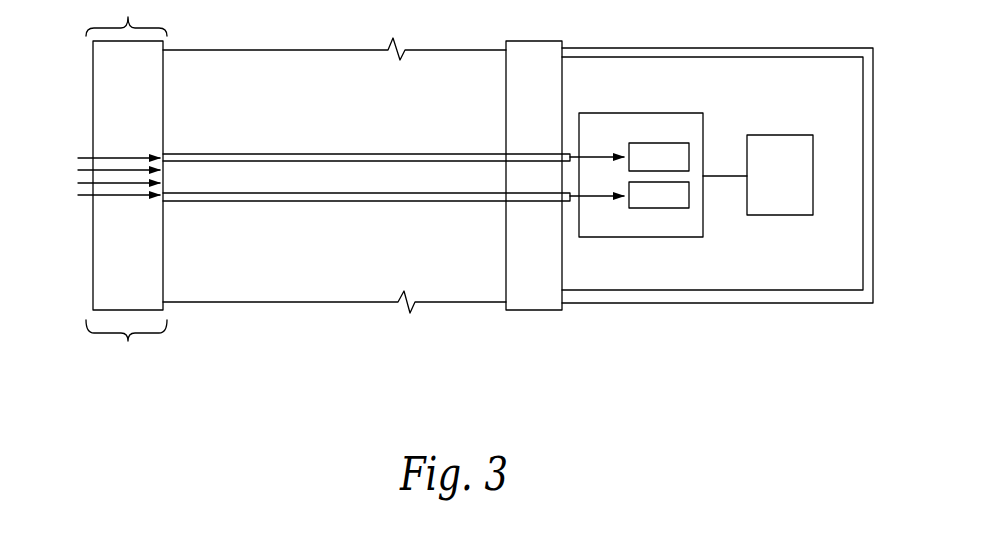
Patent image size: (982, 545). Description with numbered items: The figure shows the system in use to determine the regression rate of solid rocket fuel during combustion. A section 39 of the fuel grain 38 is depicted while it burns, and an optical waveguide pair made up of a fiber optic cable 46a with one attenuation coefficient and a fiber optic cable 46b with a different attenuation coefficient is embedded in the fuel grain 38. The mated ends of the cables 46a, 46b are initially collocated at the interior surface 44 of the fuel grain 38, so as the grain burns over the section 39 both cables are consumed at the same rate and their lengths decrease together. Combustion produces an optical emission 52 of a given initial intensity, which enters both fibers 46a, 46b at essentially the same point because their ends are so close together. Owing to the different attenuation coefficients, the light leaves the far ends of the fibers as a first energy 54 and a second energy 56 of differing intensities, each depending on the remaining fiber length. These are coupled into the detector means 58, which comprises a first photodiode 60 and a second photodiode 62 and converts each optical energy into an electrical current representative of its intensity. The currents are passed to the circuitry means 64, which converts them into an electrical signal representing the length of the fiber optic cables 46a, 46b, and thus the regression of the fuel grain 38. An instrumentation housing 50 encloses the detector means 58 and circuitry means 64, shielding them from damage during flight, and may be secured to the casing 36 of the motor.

The casing 36 is at (545, 77).
The fuel grain 38 is at (348, 120).
The section 39 is at (126, 345).
The interior surface 44 is at (92, 110).
The fiber optic cable 46a is at (262, 153).
The fiber optic cable 46b is at (262, 202).
The instrumentation housing 50 is at (874, 180).
The optical emission 52 is at (73, 150).
The first energy 54 is at (585, 155).
The second energy 56 is at (586, 200).
The detector means 58 is at (673, 118).
The first photodiode 60 is at (672, 170).
The second photodiode 62 is at (672, 207).
The circuitry means 64 is at (792, 186).